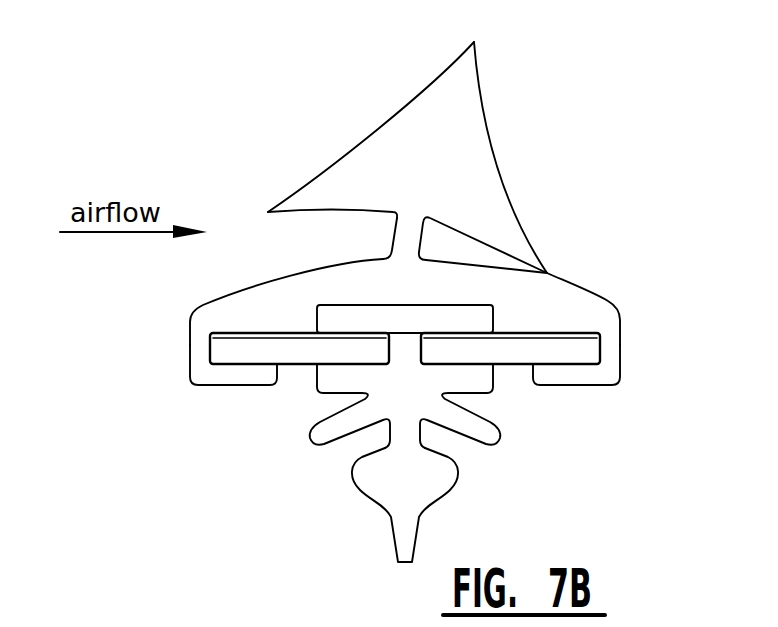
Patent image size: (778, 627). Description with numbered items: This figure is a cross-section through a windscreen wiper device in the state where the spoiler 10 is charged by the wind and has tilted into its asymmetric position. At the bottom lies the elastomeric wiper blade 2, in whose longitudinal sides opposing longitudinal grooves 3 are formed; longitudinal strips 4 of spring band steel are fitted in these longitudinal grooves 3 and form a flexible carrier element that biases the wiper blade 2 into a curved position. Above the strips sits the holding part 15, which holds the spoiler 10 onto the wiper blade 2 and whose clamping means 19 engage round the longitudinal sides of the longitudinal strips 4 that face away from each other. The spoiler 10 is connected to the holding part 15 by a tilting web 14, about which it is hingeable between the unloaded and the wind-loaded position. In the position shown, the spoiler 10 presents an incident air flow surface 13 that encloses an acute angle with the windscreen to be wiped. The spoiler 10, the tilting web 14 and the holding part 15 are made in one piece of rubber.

The wiper blade 2 is at (423, 498).
The longitudinal grooves 3 is at (388, 351).
The longitudinal strips 4 is at (285, 357).
The spoiler 10 is at (470, 157).
The incident air flow surface 13 is at (367, 127).
The tilting web 14 is at (397, 236).
The holding part 15 is at (560, 307).
The clamping means 19 is at (205, 382).